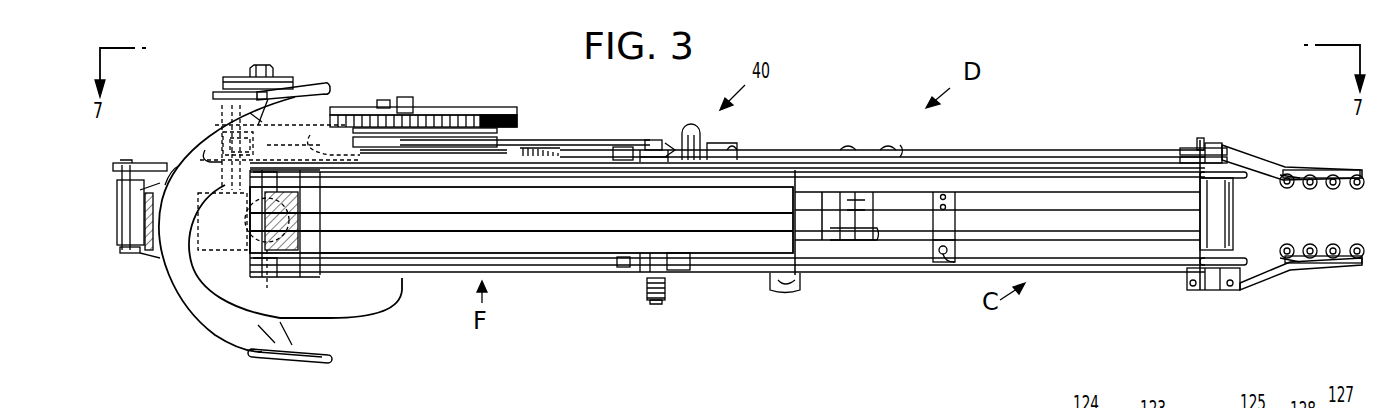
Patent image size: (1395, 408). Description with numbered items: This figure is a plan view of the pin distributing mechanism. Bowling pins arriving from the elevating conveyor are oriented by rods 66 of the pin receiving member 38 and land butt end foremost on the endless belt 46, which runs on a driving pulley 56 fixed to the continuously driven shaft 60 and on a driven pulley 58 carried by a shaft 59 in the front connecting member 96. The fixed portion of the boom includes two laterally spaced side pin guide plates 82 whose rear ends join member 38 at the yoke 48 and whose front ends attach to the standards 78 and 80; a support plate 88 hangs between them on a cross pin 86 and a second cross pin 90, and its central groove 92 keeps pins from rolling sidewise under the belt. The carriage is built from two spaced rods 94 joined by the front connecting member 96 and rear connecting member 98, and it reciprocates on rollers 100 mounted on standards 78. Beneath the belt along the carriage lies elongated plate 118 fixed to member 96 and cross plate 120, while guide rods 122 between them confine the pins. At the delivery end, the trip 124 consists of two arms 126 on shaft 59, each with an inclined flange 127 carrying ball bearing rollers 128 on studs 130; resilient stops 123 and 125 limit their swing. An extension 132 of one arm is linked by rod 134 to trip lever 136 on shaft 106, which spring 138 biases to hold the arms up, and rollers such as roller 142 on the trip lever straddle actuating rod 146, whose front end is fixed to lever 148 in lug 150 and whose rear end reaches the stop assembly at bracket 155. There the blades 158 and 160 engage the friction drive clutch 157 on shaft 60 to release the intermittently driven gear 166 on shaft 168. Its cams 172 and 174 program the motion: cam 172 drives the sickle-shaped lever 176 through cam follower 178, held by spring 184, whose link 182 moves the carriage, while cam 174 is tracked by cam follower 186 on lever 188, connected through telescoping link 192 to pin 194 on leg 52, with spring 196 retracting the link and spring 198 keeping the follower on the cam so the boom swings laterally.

The pin receiving and orienting member 38 is at (185, 300).
The endless belt 46 is at (200, 222).
The yoke 48 is at (300, 185).
The leg 52 is at (120, 222).
The driving pulley 56 is at (240, 250).
The driven pulley 58 is at (1218, 232).
The shaft 59 is at (1219, 143).
The shaft 60 is at (258, 65).
The rods 66 is at (318, 360).
The upstanding standards 78 is at (760, 170).
The upstanding standard 80 is at (806, 283).
The side pin guide plates 82 is at (487, 176).
The cross pin 86 is at (330, 253).
The support plate 88 is at (470, 258).
The second cross pin 90 is at (615, 264).
The central dished formation or groove 92 is at (573, 212).
The rods 94 is at (925, 155).
The front carriage connecting member 96 is at (1225, 182).
The rear carriage connecting member 98 is at (647, 264).
The rollers 100 is at (876, 163).
The shaft 106 is at (656, 304).
The elongated plate 118 is at (1112, 202).
The cross plate 120 is at (958, 250).
The guide rods 122 is at (1000, 175).
The resilient stop 123 is at (1192, 288).
The trip 124 is at (1328, 150).
The resilient stop 125 is at (1232, 290).
The arms 126 is at (1265, 155).
The flange 127 is at (1336, 168).
The ball bearing rollers 128 is at (1352, 246).
The stud 130 is at (1290, 178).
The extension 132 is at (1200, 138).
The elongated rod 134 is at (1052, 152).
The trip lever 136 is at (700, 140).
The spring 138 is at (668, 290).
The roller 142 is at (650, 140).
The actuating rod 146 is at (355, 152).
The lever 148 is at (690, 128).
The lug 150 is at (714, 143).
The bracket 155 is at (215, 140).
The friction drive clutch 157 is at (238, 70).
The upper blade 158 is at (285, 88).
The lower blade 160 is at (250, 113).
The intermittently driven gear 166 is at (520, 121).
The shaft 168 is at (389, 100).
The cam 172 is at (487, 112).
The cam 174 is at (520, 111).
The sickle-shaped lever 176 is at (603, 140).
The cam follower 178 is at (447, 115).
The link 182 is at (632, 147).
The spring 184 is at (556, 147).
The cam follower 186 is at (432, 112).
The lever 188 is at (380, 107).
The telescoping or extensible link 192 is at (165, 185).
The pin 194 is at (122, 253).
The spring 196 is at (118, 172).
The spring 198 is at (150, 256).